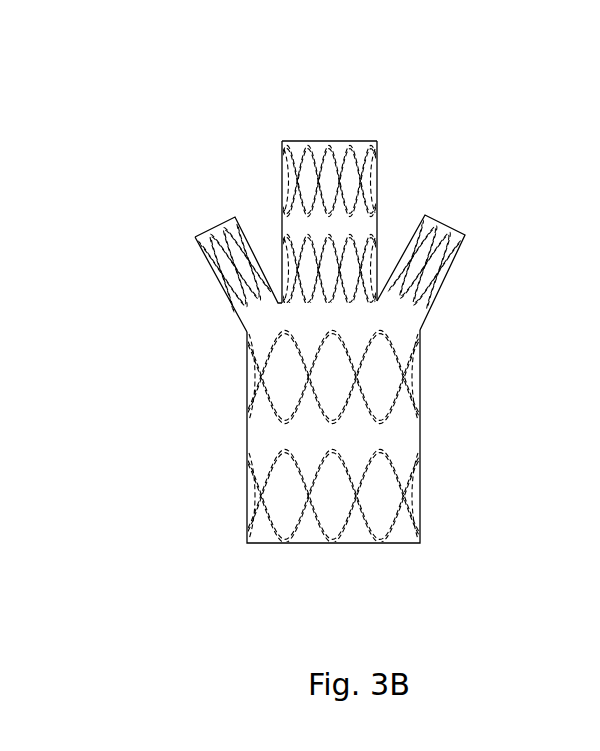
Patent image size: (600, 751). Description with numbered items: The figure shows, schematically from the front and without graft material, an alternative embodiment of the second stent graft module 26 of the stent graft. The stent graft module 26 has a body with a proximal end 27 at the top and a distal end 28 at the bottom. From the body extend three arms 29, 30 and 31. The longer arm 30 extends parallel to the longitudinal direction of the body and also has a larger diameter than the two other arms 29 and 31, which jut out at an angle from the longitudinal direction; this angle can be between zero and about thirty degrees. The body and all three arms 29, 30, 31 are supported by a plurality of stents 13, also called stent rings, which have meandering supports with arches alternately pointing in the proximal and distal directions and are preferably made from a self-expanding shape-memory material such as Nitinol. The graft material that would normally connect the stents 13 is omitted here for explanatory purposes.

The stents 13 is at (377, 170).
The second stent graft module 26 is at (117, 382).
The proximal end 27 is at (250, 143).
The distal end 28 is at (380, 557).
The arm 29 is at (207, 260).
The arm 30 is at (282, 198).
The arm 31 is at (445, 278).